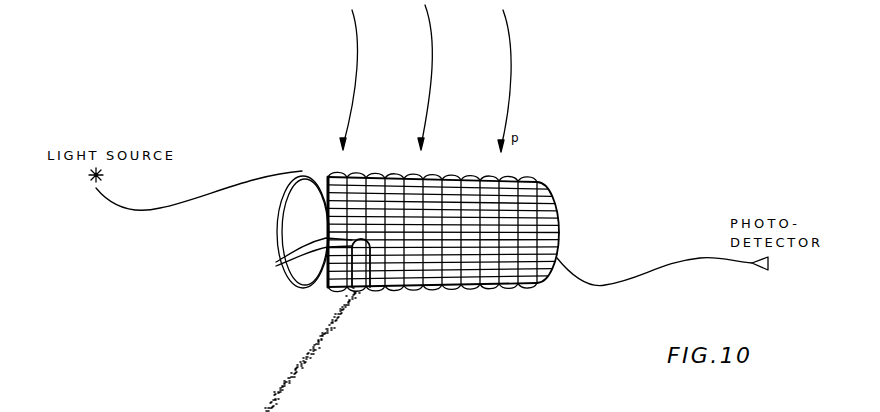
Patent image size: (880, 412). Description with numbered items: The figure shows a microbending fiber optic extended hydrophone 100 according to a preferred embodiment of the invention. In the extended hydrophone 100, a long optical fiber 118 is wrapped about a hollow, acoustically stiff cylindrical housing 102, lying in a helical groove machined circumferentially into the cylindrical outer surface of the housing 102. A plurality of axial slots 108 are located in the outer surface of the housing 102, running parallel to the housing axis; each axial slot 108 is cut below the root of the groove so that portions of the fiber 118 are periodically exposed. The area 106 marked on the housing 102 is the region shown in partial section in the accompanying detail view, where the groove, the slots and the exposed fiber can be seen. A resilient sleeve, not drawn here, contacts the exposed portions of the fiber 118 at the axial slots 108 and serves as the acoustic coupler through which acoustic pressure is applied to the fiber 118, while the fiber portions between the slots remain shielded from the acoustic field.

The extended hydrophone 100 is at (424, 275).
The cylindrical housing 102 is at (545, 287).
The area 106 is at (338, 287).
The axial slots 108 is at (278, 263).
The optical fiber 118 is at (148, 212).